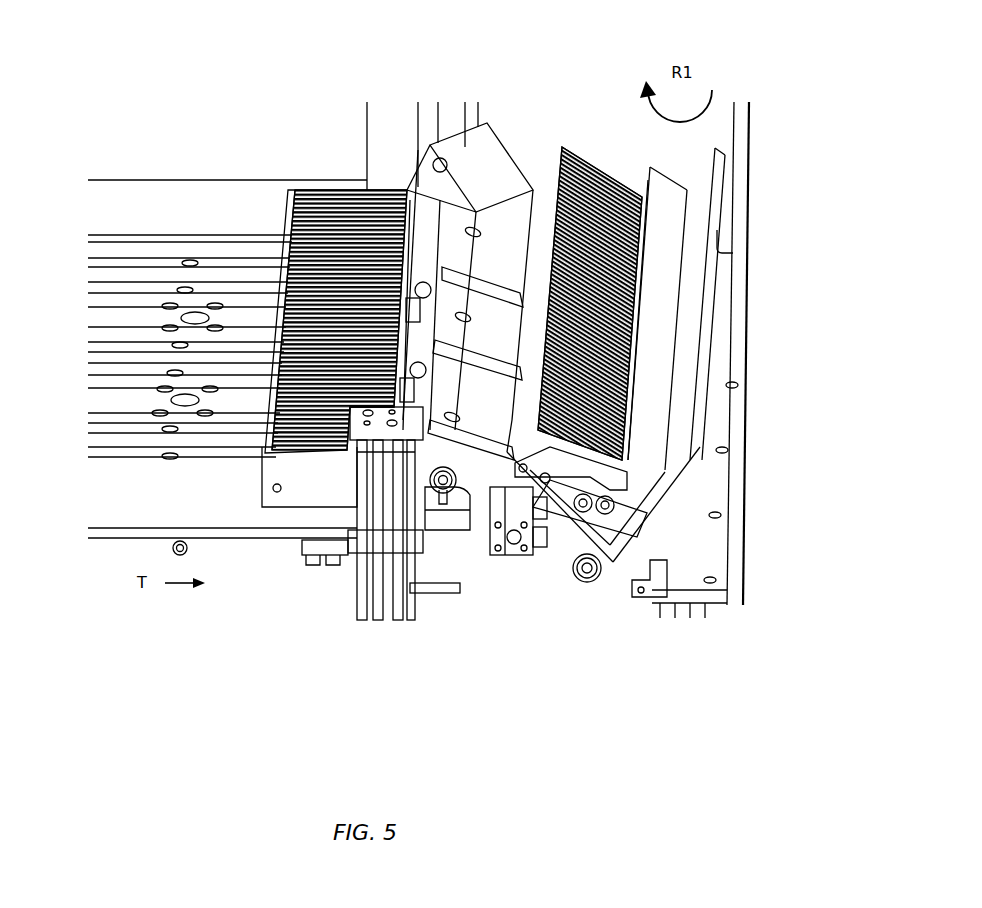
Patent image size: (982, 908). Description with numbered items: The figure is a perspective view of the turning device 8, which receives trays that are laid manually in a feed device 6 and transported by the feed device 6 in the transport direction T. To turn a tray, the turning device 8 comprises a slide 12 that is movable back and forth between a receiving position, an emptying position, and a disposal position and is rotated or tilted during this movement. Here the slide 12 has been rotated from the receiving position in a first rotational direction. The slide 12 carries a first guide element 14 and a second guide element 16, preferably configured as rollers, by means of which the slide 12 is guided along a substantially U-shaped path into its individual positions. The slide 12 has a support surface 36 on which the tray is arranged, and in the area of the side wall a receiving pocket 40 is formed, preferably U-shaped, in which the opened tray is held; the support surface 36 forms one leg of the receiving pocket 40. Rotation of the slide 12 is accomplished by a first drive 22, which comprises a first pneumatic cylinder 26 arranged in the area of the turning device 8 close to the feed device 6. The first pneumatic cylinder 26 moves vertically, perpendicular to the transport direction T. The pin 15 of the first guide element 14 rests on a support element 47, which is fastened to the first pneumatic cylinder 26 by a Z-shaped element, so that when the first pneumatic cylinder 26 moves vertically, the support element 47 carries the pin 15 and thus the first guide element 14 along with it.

The feed device 6 is at (150, 217).
The turning device 8 is at (593, 122).
The slide 12 is at (562, 554).
The first guide element 14 is at (470, 494).
The pin 15 is at (442, 506).
The second guide element 16 is at (600, 582).
The first drive 22 is at (396, 594).
The first pneumatic cylinder 26 is at (368, 553).
The support surface 36 is at (483, 240).
The receiving pocket 40 is at (598, 462).
The support element 47 is at (450, 500).